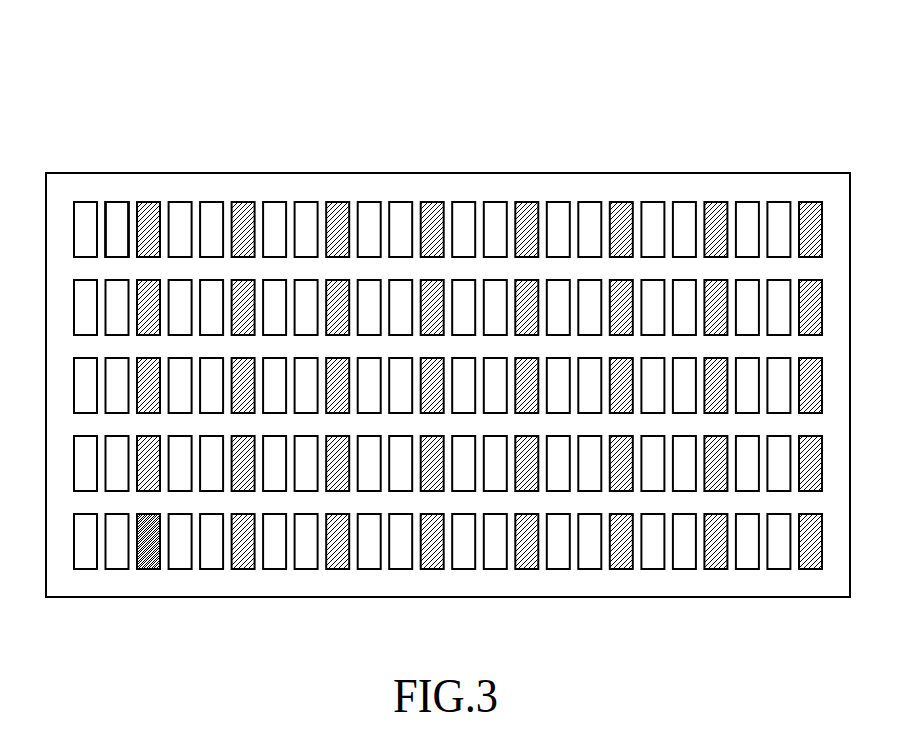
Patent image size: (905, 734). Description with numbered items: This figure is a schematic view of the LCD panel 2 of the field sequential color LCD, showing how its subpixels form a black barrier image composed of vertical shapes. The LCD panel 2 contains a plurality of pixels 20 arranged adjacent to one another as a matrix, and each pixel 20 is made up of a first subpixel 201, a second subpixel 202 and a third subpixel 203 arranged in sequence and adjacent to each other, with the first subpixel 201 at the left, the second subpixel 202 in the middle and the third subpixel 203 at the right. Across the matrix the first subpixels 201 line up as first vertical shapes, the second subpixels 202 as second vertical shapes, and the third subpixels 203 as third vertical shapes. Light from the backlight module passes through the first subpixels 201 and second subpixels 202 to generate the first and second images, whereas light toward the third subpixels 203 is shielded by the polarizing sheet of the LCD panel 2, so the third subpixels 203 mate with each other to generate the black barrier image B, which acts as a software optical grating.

The LCD panel 2 is at (851, 50).
The pixel 20 is at (178, 118).
The first subpixel 201 is at (86, 228).
The second subpixel 202 is at (116, 215).
The third subpixel 203 is at (147, 203).
The black barrier image B is at (157, 571).